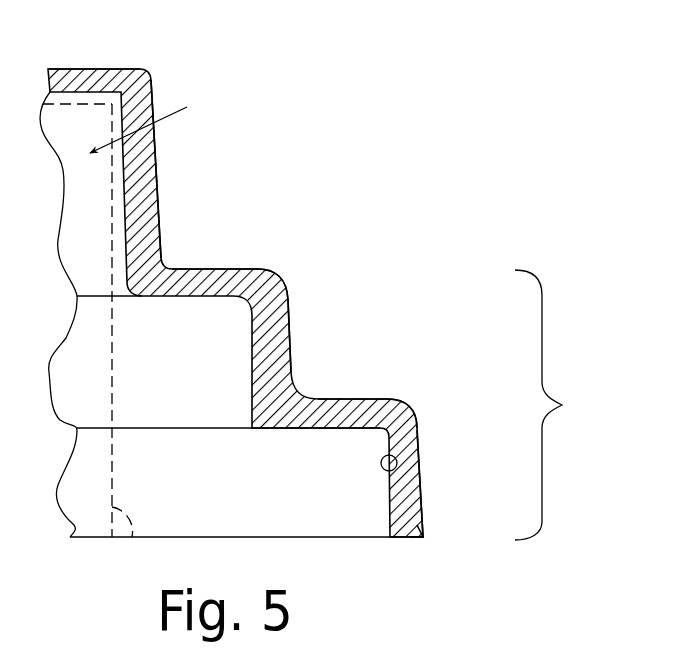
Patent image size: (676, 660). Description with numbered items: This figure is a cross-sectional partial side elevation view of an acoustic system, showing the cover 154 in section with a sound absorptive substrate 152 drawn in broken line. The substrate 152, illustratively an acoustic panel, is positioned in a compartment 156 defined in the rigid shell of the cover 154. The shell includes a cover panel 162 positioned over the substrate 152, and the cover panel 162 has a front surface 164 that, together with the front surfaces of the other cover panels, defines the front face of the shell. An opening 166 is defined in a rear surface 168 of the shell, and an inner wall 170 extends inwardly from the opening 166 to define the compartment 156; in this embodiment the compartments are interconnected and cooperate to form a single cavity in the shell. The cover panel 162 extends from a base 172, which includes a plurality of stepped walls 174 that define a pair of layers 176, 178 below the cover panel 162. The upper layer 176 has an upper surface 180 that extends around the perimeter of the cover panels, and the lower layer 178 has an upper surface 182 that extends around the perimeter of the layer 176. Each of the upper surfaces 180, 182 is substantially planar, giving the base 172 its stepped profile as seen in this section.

The sound absorptive substrate 152 is at (132, 541).
The cover 154 is at (375, 133).
The compartment 156 is at (156, 123).
The cover panel 162 is at (155, 150).
The front surface 164 is at (90, 69).
The opening 166 is at (392, 538).
The rear surface 168 is at (412, 538).
The inner wall 170 is at (392, 455).
The base 172 is at (562, 405).
The stepped wall 174 is at (291, 330).
The layer 176 is at (278, 274).
The layer 178 is at (403, 401).
The upper surface 180 is at (212, 268).
The upper surface 182 is at (337, 399).